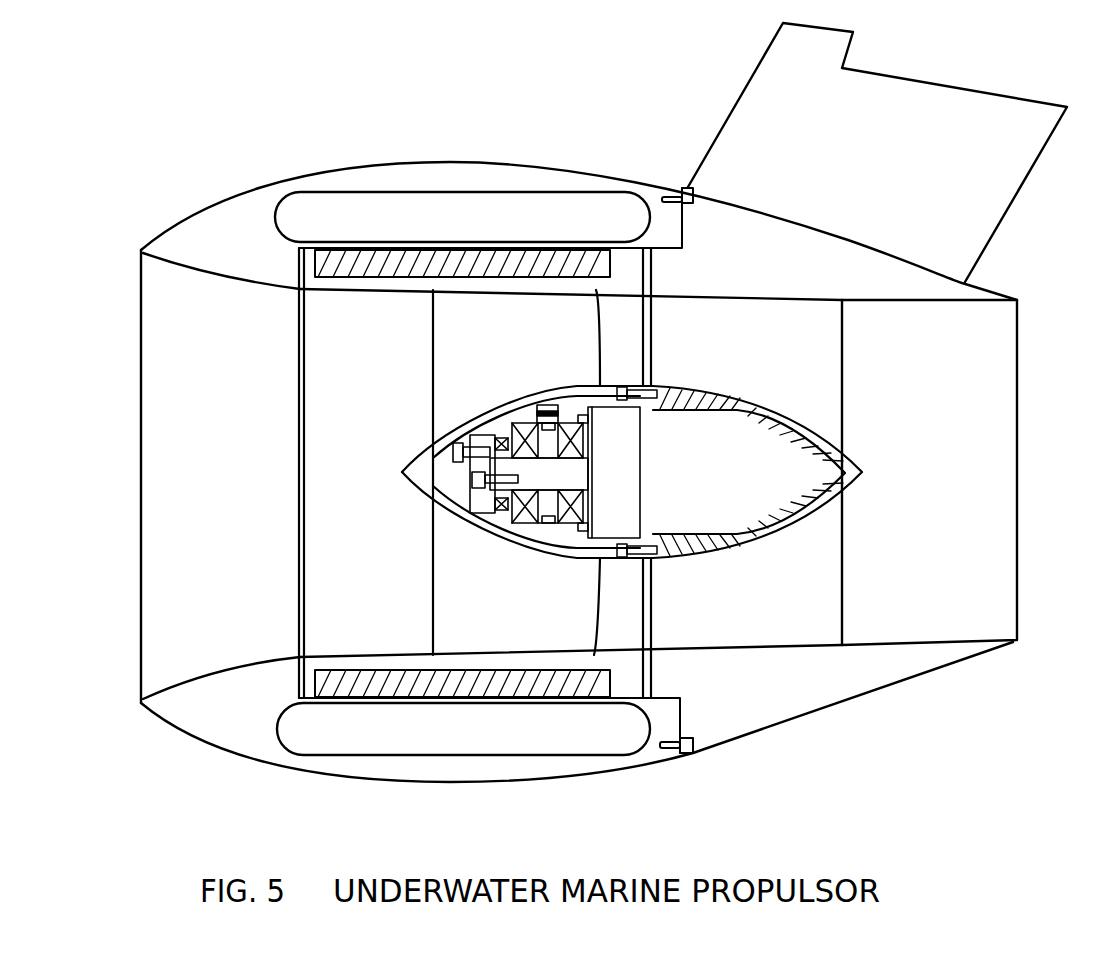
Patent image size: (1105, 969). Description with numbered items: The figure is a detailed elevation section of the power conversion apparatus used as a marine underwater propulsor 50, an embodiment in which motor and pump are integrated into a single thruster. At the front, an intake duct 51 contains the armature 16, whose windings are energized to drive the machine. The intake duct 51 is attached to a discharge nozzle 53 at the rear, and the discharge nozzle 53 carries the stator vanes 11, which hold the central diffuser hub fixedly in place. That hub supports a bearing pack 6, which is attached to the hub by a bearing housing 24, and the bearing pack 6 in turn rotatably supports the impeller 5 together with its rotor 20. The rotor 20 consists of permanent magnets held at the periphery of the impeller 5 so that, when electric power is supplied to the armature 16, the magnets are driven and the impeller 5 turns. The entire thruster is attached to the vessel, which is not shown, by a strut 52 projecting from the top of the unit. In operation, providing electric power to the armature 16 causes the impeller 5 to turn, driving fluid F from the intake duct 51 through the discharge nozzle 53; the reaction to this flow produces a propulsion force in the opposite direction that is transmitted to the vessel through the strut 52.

The impeller 5 is at (433, 378).
The marine underwater propulsor 50 is at (462, 133).
The intake duct 51 is at (305, 170).
The strut 52 is at (890, 169).
The discharge nozzle 53 is at (790, 268).
The armature 16 is at (495, 234).
The rotor 20 is at (520, 264).
The stator vanes 11 is at (775, 372).
The bearing housing 24 is at (603, 533).
The bearing pack 6 is at (583, 503).
The fluid F is at (967, 472).